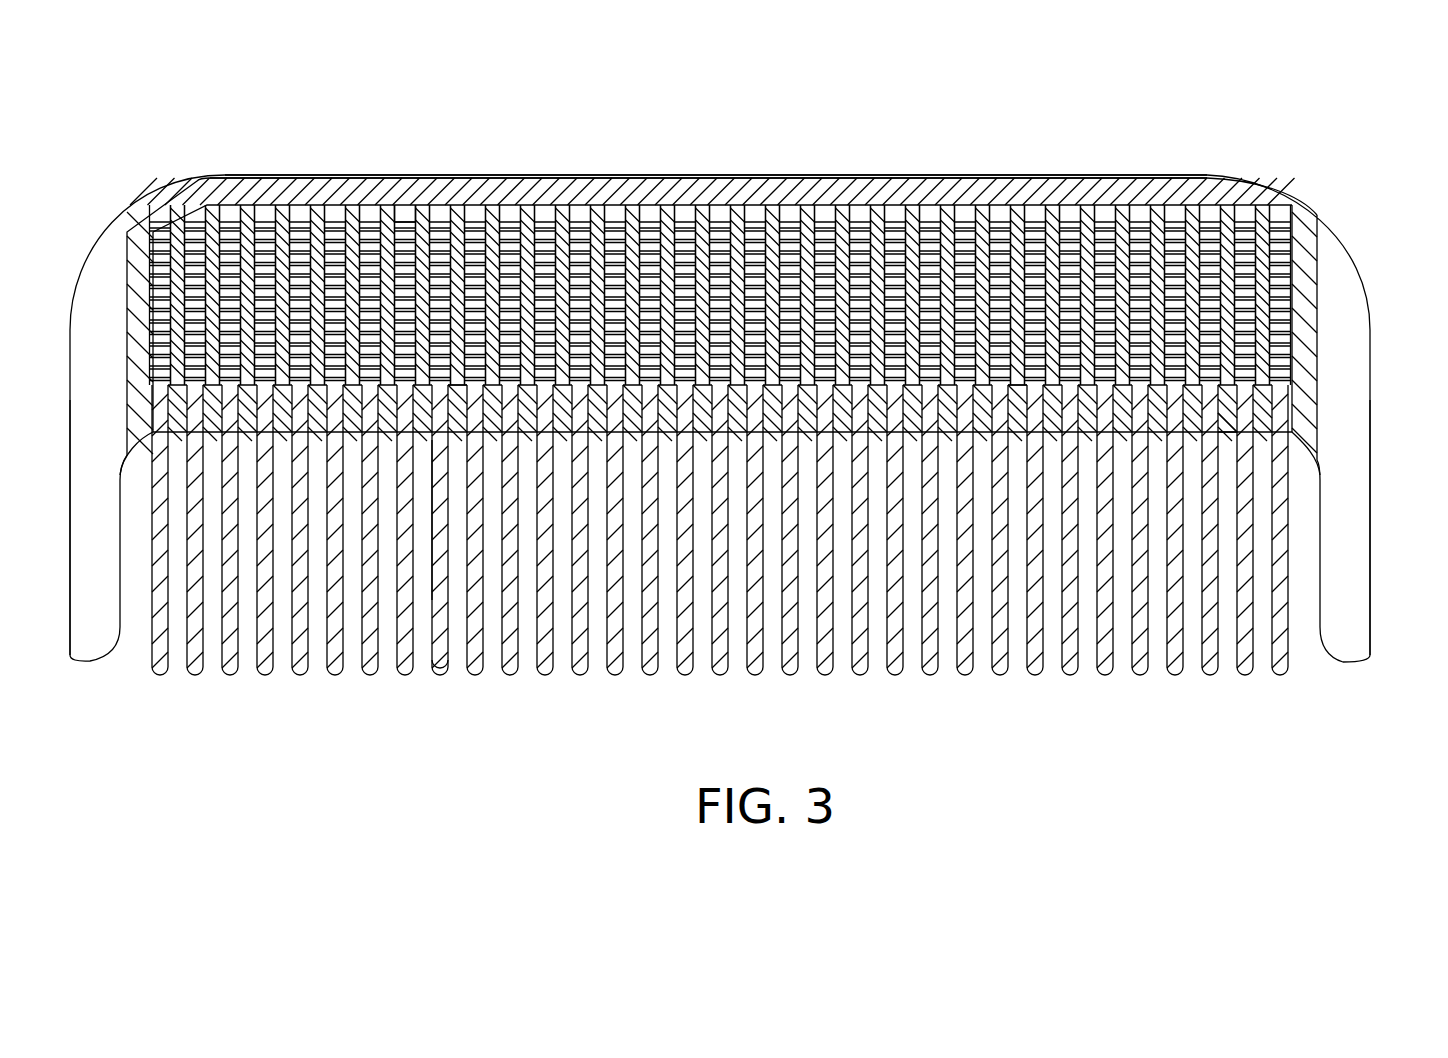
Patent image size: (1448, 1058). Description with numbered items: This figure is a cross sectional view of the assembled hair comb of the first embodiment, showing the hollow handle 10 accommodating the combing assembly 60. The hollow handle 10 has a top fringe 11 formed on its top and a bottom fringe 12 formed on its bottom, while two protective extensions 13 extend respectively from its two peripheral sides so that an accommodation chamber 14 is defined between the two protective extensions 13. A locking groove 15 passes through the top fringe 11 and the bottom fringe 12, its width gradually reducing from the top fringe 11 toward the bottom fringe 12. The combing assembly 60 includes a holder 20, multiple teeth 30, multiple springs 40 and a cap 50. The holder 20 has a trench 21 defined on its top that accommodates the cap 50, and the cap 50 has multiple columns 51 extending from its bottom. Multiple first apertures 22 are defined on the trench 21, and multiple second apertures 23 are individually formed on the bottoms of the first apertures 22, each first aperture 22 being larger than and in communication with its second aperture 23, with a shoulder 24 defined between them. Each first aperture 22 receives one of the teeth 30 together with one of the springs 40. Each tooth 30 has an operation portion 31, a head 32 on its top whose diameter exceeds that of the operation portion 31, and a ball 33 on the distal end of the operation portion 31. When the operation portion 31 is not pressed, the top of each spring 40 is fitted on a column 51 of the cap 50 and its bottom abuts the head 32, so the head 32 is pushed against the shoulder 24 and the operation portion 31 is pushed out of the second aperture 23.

The hollow handle 10 is at (749, 495).
The top fringe 11 is at (1203, 177).
The bottom fringe 12 is at (1228, 440).
The protective extensions 13 is at (88, 610).
The accommodation chamber 14 is at (740, 548).
The locking groove 15 is at (138, 285).
The holder 20 is at (773, 423).
The trench 21 is at (1295, 225).
The first apertures 22 is at (1002, 233).
The second apertures 23 is at (1050, 395).
The shoulder 24 is at (1003, 385).
The teeth 30 is at (423, 485).
The operation portion 31 is at (430, 528).
The head 32 is at (447, 380).
The ball 33 is at (437, 667).
The springs 40 is at (437, 233).
The cap 50 is at (402, 215).
The columns 51 is at (398, 205).
The combing assembly 60 is at (668, 168).